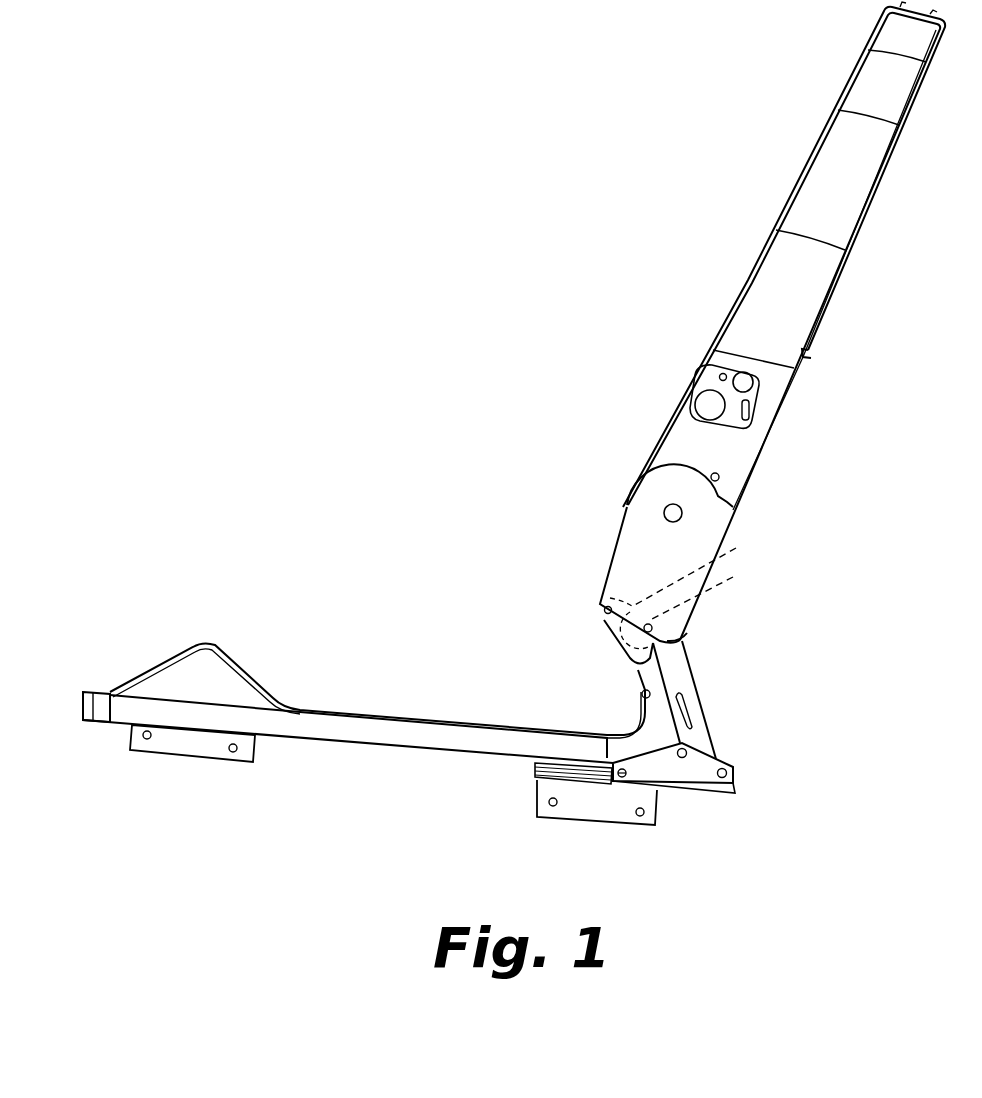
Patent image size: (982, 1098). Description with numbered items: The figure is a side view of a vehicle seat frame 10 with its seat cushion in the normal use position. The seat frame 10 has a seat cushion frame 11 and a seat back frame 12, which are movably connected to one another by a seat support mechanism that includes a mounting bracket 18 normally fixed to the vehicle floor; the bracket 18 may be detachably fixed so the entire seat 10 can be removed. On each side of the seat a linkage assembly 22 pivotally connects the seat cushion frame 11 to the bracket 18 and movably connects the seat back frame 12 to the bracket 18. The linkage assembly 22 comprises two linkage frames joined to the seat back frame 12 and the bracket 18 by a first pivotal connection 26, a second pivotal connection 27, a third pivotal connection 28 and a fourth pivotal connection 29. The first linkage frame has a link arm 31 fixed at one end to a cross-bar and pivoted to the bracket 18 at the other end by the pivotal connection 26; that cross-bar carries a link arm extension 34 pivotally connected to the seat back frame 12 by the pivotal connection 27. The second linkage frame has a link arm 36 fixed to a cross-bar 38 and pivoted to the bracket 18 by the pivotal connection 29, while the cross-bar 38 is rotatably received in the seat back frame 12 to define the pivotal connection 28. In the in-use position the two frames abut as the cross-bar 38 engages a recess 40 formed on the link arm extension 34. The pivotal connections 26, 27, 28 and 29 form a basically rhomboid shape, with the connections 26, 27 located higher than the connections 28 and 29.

The vehicle seat frame 10 is at (475, 337).
The seat cushion frame 11 is at (365, 687).
The seat back frame 12 is at (662, 407).
The mounting bracket 18 is at (738, 786).
The linkage assembly 22 is at (707, 682).
The first pivotal connection 26 is at (683, 758).
The second pivotal connection 27 is at (604, 610).
The third pivotal connection 28 is at (660, 626).
The fourth pivotal connection 29 is at (730, 767).
The link arm 31 is at (643, 687).
The link arm extension 34 is at (630, 648).
The link arm 36 is at (695, 720).
The cross-bar 38 is at (733, 577).
The recess 40 is at (736, 548).